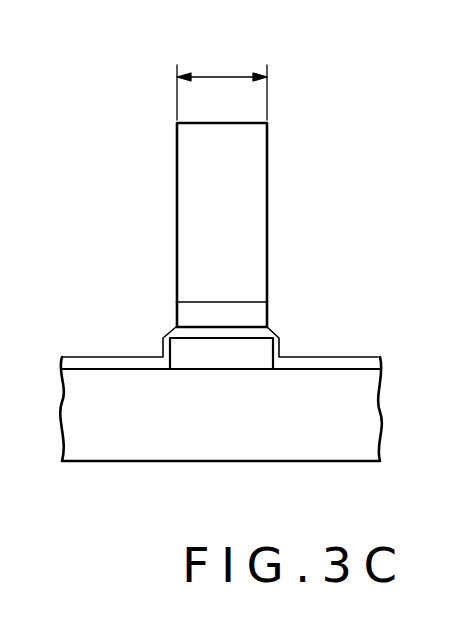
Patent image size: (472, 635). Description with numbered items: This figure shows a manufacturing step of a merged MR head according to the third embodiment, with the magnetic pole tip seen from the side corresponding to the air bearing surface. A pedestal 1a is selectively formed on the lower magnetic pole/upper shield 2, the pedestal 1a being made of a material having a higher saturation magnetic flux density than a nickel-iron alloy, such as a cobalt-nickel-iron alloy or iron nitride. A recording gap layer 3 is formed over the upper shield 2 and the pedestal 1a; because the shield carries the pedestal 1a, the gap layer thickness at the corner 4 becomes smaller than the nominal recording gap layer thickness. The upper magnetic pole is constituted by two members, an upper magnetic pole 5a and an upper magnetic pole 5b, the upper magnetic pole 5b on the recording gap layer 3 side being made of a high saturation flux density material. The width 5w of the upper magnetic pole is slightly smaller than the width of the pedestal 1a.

The pedestal 1a is at (243, 355).
The upper shield 2 is at (130, 428).
The recording gap layer 3 is at (186, 333).
The corner 4 is at (278, 330).
The upper magnetic pole 5a is at (250, 200).
The upper magnetic pole 5b is at (242, 318).
The width of upper magnetic pole 5w is at (222, 74).